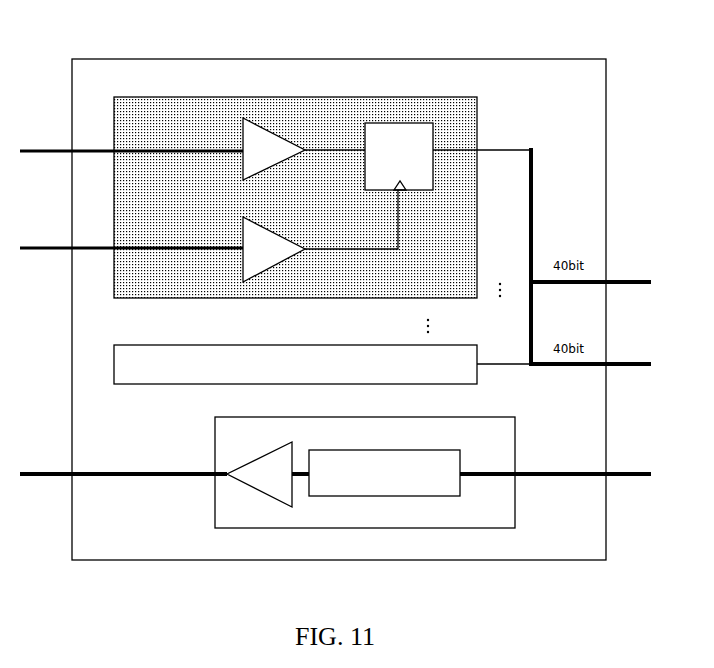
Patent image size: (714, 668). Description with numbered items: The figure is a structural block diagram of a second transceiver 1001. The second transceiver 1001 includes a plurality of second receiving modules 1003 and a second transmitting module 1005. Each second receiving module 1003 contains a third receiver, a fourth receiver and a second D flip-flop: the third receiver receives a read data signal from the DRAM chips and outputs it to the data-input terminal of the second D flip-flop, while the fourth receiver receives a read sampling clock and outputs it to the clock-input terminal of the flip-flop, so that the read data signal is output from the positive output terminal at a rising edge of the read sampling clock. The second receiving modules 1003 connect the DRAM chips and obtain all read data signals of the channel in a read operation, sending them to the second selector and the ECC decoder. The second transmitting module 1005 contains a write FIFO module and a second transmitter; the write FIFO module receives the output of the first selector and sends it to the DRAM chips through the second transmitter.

The second transceiver 1001 is at (495, 59).
The second receiving module 1003 is at (288, 97).
The second transmitting module 1005 is at (515, 445).